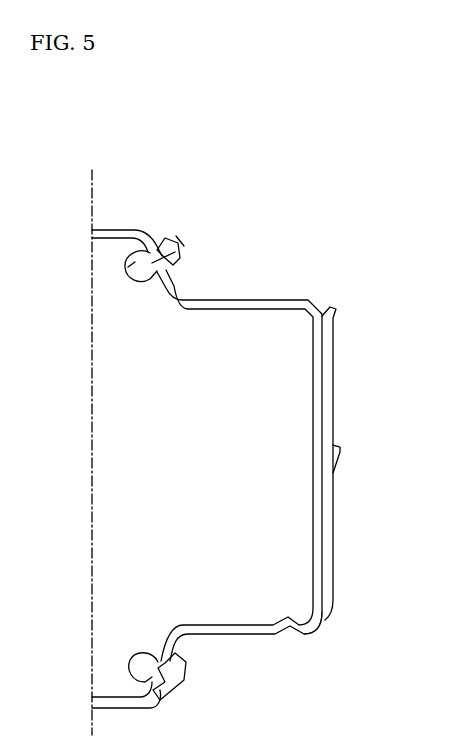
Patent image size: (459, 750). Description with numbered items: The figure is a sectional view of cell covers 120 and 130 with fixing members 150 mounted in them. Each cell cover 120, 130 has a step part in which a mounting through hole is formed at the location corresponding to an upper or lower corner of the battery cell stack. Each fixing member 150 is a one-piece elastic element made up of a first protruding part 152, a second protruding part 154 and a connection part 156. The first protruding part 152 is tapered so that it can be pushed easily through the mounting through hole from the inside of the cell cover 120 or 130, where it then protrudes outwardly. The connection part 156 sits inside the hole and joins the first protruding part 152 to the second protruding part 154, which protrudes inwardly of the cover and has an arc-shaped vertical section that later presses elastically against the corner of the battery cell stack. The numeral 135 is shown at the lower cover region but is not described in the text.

The cell cover 120 is at (262, 300).
The cell cover 130 is at (323, 627).
The lower clip 135 is at (148, 650).
The fixing member 150 is at (164, 193).
The first protruding part 152 is at (206, 202).
The second protruding part 154 is at (137, 253).
The connection part 156 is at (172, 248).